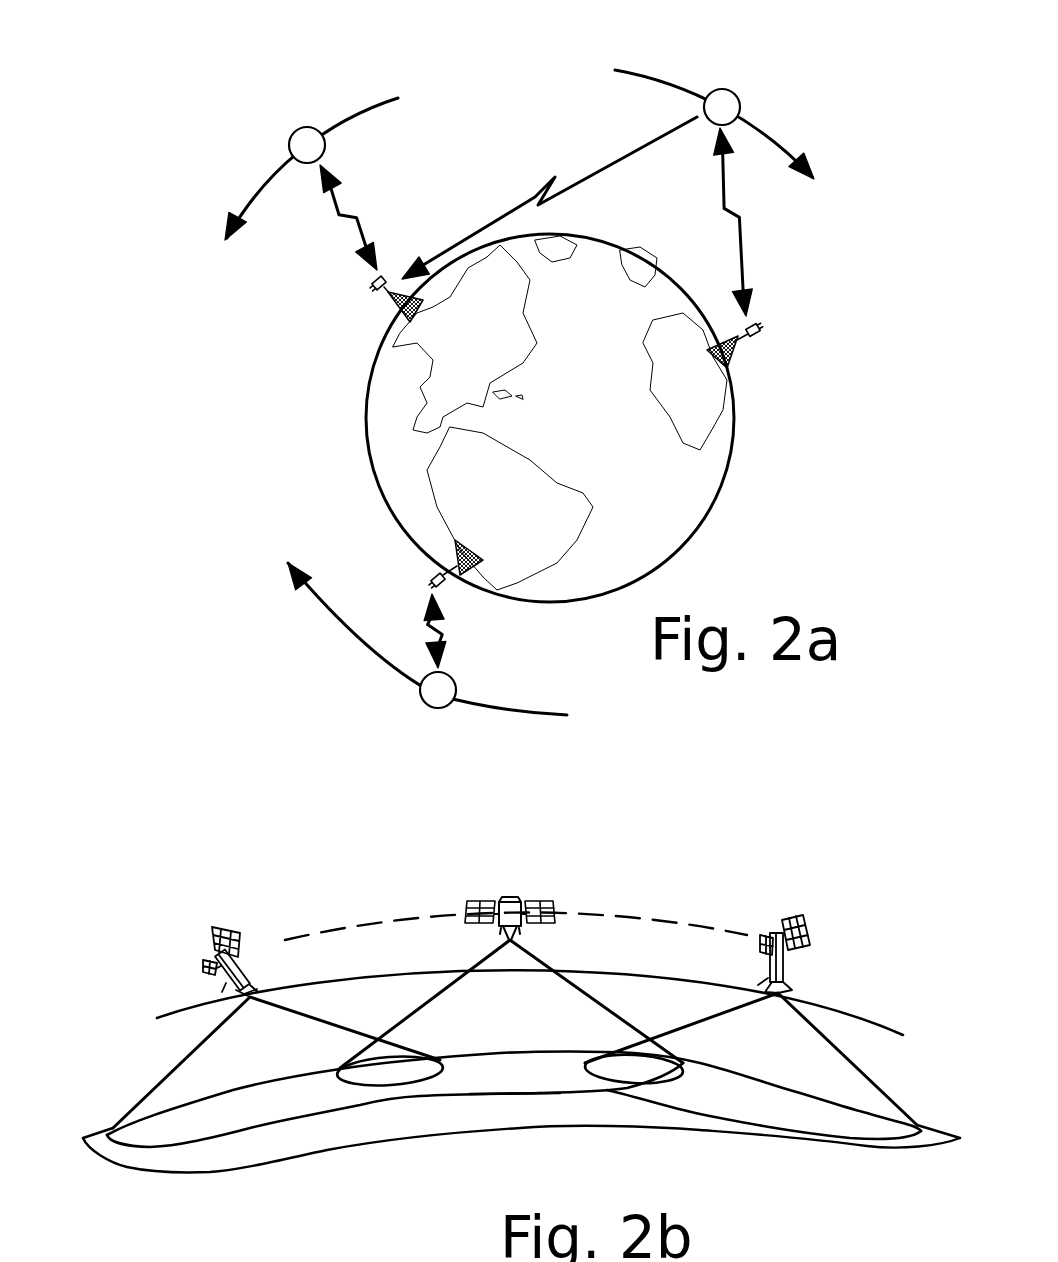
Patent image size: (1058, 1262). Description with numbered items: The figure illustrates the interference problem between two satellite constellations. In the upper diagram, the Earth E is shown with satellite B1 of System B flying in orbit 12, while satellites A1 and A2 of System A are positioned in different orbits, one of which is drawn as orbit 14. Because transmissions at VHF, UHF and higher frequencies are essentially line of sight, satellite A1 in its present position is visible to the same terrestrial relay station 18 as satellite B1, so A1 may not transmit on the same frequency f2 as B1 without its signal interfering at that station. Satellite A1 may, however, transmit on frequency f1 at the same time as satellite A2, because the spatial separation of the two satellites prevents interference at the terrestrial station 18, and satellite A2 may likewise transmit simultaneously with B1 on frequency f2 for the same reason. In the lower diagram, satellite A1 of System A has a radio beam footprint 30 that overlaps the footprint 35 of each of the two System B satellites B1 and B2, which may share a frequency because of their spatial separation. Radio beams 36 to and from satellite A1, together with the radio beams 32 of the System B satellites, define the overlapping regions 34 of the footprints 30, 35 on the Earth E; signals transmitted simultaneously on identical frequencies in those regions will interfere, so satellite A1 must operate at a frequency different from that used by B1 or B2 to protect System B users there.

In FIG. 2A, the orbit 12 is at (372, 108).
In FIG. 2B, the orbit 12 is at (400, 922).
In FIG. 2A, the second satellite orbit (A satellites) 14 is at (657, 72).
In FIG. 2B, the second satellite orbit (A satellites) 14 is at (617, 944).
In FIG. 2A, the terrestrial relay station 18 is at (395, 311).
In FIG. 2A, the Earth E is at (732, 448).
In FIG. 2B, the Earth E is at (893, 1150).
In FIG. 2A, the frequency f1 is at (528, 190).
In FIG. 2A, the frequency f2 is at (355, 232).
In FIG. 2A, the satellite A1 is at (740, 92).
In FIG. 2B, the satellite A1 is at (512, 905).
In FIG. 2A, the satellite A2 is at (423, 708).
In FIG. 2A, the satellite B1 is at (297, 130).
In FIG. 2B, the satellite B1 is at (225, 930).
In FIG. 2B, the satellite B2 is at (780, 922).
In FIG. 2B, the radio beam footprint 30 is at (517, 1097).
In FIG. 2B, the radio beams 32 is at (160, 1080).
In FIG. 2B, the overlapping regions 34 is at (415, 1077).
In FIG. 2B, the footprint 35 is at (333, 1114).
In FIG. 2B, the radio beams 36 is at (420, 1007).